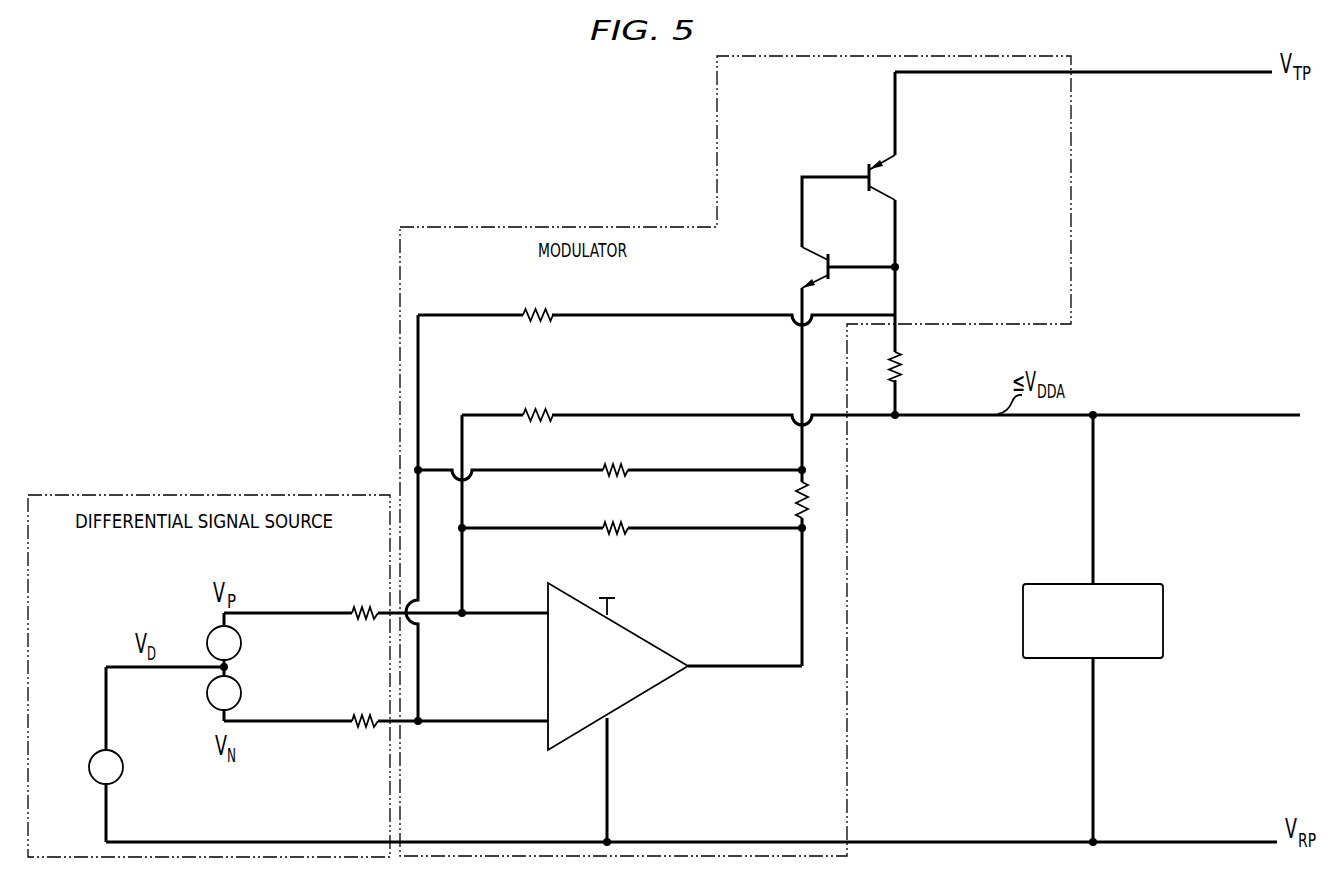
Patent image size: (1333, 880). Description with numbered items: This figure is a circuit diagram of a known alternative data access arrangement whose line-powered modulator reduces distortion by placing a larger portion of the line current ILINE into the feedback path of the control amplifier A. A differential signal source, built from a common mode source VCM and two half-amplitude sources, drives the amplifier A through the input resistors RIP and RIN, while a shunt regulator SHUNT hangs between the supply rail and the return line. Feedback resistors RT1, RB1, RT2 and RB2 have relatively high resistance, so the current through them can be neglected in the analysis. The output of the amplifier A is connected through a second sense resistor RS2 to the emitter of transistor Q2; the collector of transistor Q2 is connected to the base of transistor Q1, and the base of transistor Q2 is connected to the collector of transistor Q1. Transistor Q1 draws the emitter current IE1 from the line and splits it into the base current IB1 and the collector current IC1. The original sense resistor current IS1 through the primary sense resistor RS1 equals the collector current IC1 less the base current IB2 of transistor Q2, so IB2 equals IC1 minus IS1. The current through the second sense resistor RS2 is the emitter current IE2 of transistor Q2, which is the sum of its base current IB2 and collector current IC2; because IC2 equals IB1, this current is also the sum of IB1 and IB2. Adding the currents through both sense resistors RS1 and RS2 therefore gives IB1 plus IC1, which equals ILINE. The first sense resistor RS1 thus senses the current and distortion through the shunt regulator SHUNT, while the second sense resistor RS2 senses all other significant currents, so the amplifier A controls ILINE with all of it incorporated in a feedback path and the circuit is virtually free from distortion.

The transistor Q1 is at (862, 211).
The transistor Q2 is at (838, 358).
The resistor RT1 is at (656, 296).
The resistor RB1 is at (678, 397).
The resistor RT2 is at (610, 451).
The resistor RB2 is at (632, 551).
The first sense resistor RS1 is at (878, 341).
The second sense resistor RS2 is at (780, 568).
The input resistor RIP is at (386, 631).
The input resistor RIN is at (386, 700).
The control amplifier A is at (675, 712).
The common mode voltage source VCM is at (127, 768).
The shunt regulator SHUNT is at (1093, 628).
The transistor Q1 emitter current IE1 is at (913, 112).
The transistor Q1 collector current IC1 is at (913, 195).
The transistor Q1 base current IB1 is at (880, 205).
The transistor Q2 collector current IC2 is at (786, 195).
The transistor Q2 base current IB2 is at (832, 277).
The transistor Q2 emitter current IE2 is at (824, 405).
The original sense resistor current IS1 is at (913, 365).
The line current ILINE is at (1210, 868).